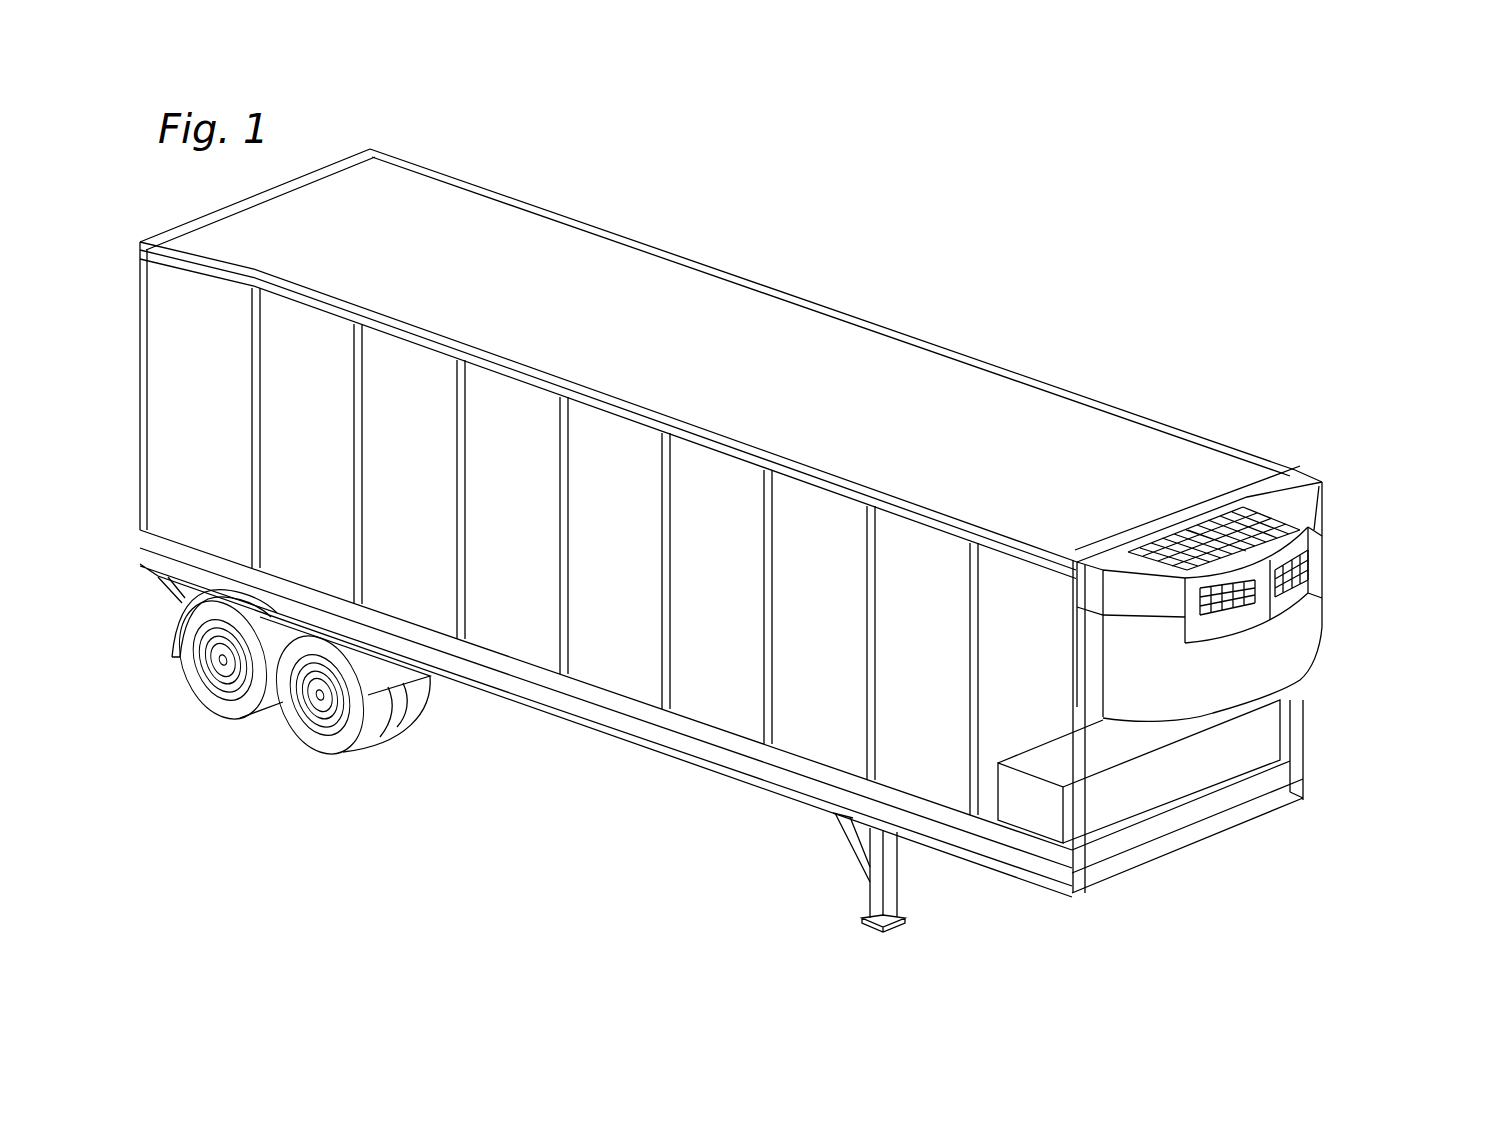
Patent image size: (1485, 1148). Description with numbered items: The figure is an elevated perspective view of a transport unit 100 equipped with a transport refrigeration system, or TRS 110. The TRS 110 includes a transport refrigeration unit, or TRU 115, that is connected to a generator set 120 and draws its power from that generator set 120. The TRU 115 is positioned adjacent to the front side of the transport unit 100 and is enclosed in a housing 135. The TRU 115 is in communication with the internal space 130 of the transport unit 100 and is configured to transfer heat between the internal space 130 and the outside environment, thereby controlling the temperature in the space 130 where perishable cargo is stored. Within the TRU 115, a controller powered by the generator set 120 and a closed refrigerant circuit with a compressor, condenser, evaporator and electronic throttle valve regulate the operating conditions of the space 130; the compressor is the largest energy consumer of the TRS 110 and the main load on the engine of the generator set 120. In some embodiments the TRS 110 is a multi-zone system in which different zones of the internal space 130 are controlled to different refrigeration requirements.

The transport unit 100 is at (1080, 256).
The transport refrigeration system (TRS) 110 is at (1322, 456).
The transport refrigeration unit (TRU) 115 is at (1322, 623).
The generator set 120 is at (1283, 735).
The internal space 130 is at (942, 463).
The housing 135 is at (1320, 568).